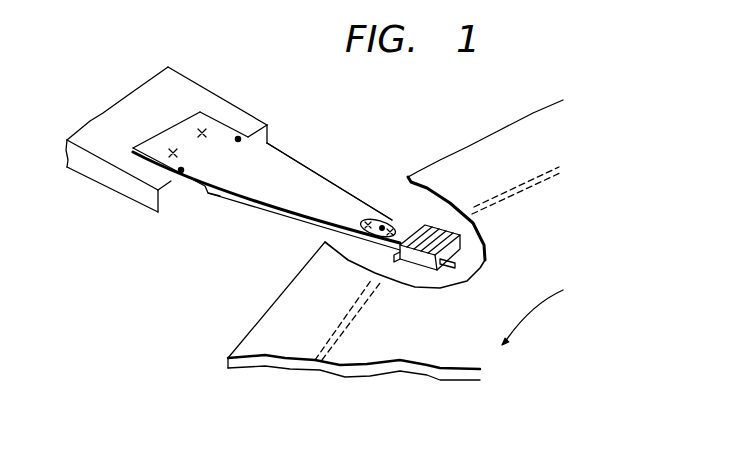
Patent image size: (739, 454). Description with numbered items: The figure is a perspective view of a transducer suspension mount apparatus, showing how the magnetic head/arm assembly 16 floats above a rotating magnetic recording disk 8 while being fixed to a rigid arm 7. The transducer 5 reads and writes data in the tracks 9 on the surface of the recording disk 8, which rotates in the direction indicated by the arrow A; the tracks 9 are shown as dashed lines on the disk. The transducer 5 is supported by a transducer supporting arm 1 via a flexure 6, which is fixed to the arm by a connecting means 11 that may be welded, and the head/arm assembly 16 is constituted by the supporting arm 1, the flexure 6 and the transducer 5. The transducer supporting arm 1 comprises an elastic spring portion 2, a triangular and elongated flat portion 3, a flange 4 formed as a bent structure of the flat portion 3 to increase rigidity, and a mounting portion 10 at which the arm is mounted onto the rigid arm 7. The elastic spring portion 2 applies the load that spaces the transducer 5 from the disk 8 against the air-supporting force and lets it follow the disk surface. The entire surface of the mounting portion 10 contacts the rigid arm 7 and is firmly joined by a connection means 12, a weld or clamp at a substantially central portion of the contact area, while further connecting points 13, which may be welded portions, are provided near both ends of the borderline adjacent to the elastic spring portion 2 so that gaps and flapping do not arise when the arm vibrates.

The transducer supporting arm 1 is at (222, 213).
The elastic spring portion 2 is at (199, 172).
The flat portion 3 is at (313, 184).
The flange 4 is at (277, 213).
The transducer 5 is at (427, 227).
The flexure 6 is at (391, 241).
The rigid arm 7 is at (93, 122).
The recording disk 8 is at (442, 343).
The tracks 9 is at (323, 355).
The mounting portion 10 is at (217, 132).
The connecting means 11 is at (365, 219).
The connection means 12 is at (202, 130).
The further connecting points 13 is at (240, 137).
The magnetic head/arm assembly 16 is at (295, 146).
The arrow A is at (545, 306).